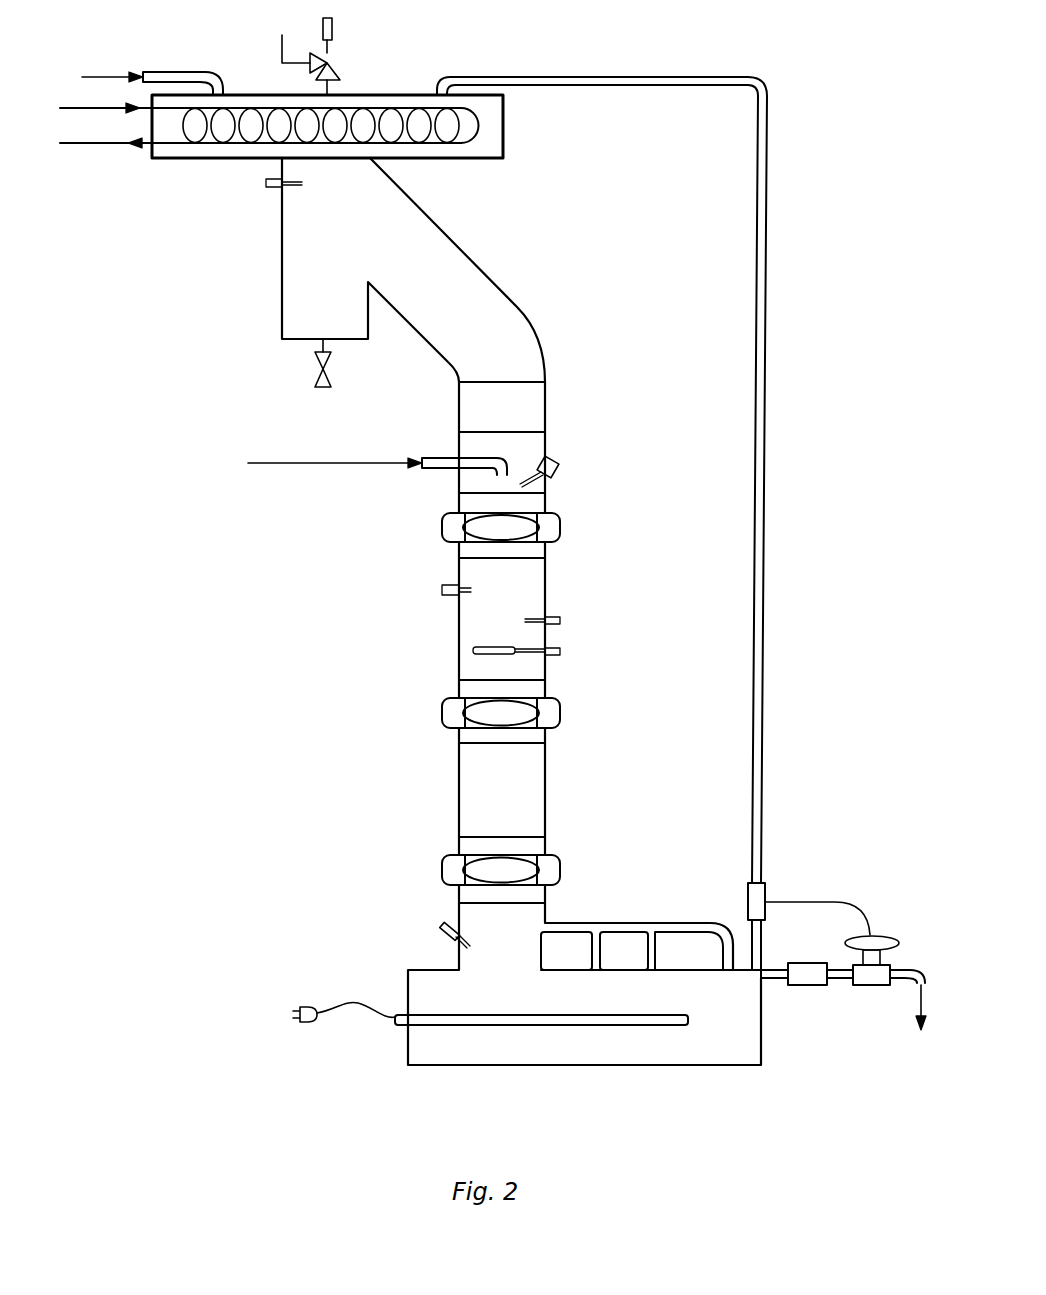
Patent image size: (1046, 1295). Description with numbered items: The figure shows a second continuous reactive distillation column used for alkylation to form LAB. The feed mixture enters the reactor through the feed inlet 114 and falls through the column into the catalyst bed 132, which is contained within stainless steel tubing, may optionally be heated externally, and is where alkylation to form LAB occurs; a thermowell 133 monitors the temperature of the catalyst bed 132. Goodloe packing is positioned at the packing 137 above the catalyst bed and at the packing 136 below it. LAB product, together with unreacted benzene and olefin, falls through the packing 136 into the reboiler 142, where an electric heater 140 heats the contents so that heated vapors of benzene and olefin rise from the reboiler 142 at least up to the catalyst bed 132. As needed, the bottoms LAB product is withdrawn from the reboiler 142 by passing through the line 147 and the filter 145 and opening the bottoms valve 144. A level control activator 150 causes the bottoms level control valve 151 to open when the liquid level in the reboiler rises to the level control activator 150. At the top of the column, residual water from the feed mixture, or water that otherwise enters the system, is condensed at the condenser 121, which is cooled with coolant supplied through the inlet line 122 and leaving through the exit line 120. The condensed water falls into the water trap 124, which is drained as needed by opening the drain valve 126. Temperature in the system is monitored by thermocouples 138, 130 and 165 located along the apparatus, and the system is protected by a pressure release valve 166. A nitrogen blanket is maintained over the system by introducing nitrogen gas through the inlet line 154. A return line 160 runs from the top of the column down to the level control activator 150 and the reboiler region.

The feed inlet 114 is at (433, 468).
The exit line 120 is at (118, 109).
The condenser 121 is at (507, 127).
The inlet line 122 is at (105, 145).
The water trap 124 is at (282, 290).
The drain valve 126 is at (317, 375).
The thermocouple 130 is at (556, 462).
The catalyst bed 132 is at (547, 577).
The thermowell 133 is at (442, 588).
The packing 136 is at (547, 792).
The packing 137 is at (547, 400).
The thermocouple 138 is at (443, 925).
The electric heater 140 is at (293, 1013).
The reboiler 142 is at (658, 1027).
The bottoms valve 144 is at (863, 985).
The filter 145 is at (798, 963).
The line 147 is at (772, 982).
The level control activator 150 is at (767, 888).
The bottoms level control valve 151 is at (875, 937).
The inlet line 154 is at (170, 70).
The return line 160 is at (768, 148).
The thermocouple 165 is at (266, 183).
The pressure release valve 166 is at (333, 32).